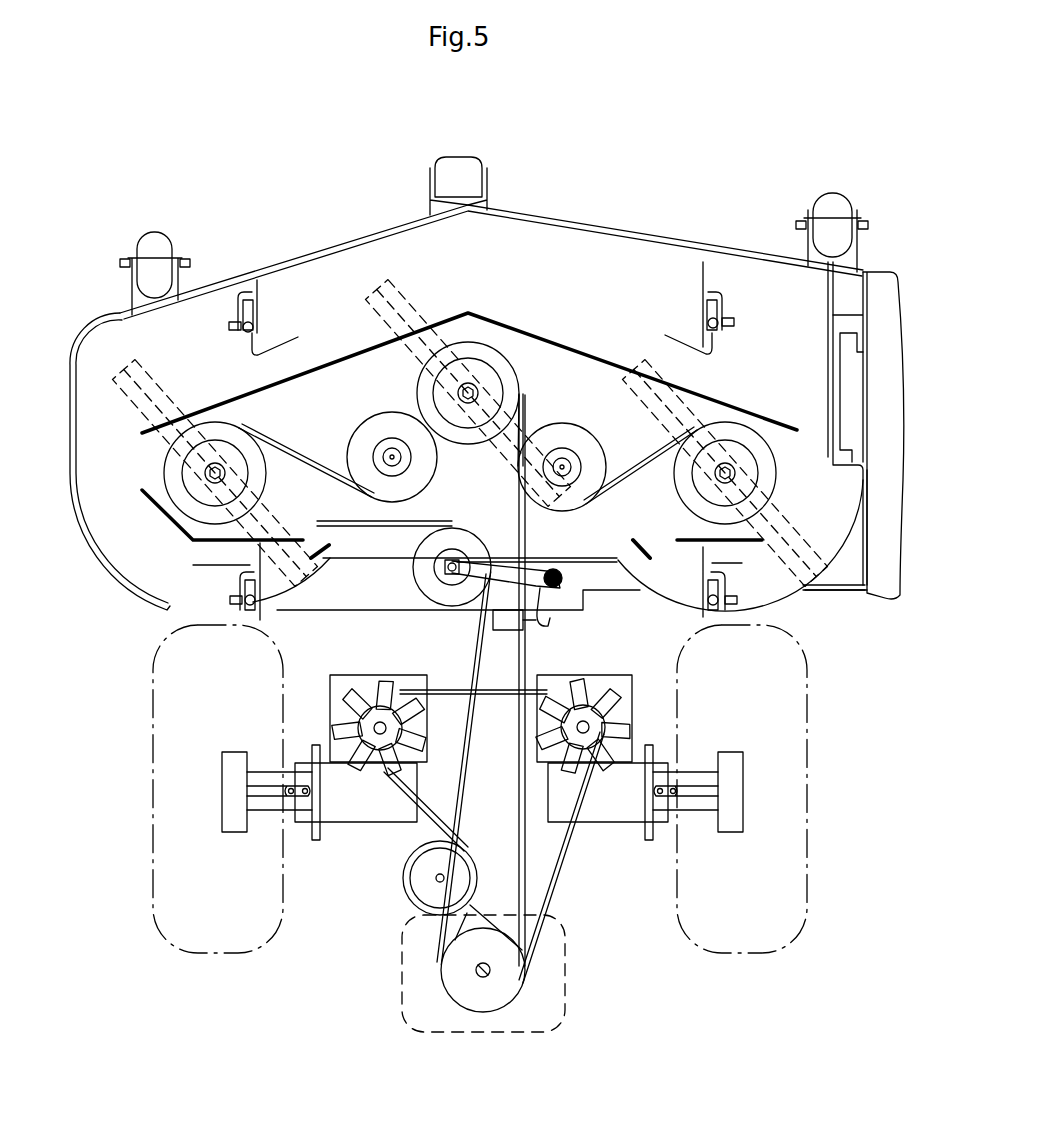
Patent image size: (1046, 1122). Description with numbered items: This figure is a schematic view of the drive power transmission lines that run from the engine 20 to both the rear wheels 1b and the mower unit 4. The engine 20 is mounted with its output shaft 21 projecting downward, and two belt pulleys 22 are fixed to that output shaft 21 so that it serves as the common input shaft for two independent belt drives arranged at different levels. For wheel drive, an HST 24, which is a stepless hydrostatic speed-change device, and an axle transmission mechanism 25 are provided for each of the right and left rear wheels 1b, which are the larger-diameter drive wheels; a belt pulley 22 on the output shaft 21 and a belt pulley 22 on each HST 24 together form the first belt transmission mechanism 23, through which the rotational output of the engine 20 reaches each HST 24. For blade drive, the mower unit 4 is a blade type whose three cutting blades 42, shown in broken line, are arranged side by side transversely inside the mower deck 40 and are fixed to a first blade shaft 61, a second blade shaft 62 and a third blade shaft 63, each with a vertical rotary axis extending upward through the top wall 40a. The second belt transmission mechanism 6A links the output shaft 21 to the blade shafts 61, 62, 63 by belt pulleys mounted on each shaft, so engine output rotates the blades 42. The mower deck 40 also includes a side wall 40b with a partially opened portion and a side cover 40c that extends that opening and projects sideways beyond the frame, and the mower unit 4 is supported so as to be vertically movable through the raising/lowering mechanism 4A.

The mower unit 4 is at (300, 210).
The mower deck 40 is at (556, 219).
The top wall 40a is at (637, 268).
The side wall 40b is at (785, 600).
The side cover 40c is at (885, 272).
The raising/lowering mechanism 4A is at (228, 305).
The cutting blade 42 is at (160, 370).
The first blade shaft 61 is at (213, 473).
The second blade shaft 62 is at (470, 388).
The third blade shaft 63 is at (728, 468).
The second belt transmission mechanism 6A is at (313, 455).
The HST 24 is at (375, 675).
The axle transmission mechanism 25 is at (350, 822).
The rear wheel 1b is at (150, 800).
The first belt transmission mechanism 23 is at (570, 884).
The belt pulley 22 is at (468, 1005).
The output shaft 21 is at (476, 970).
The engine 20 is at (500, 1035).